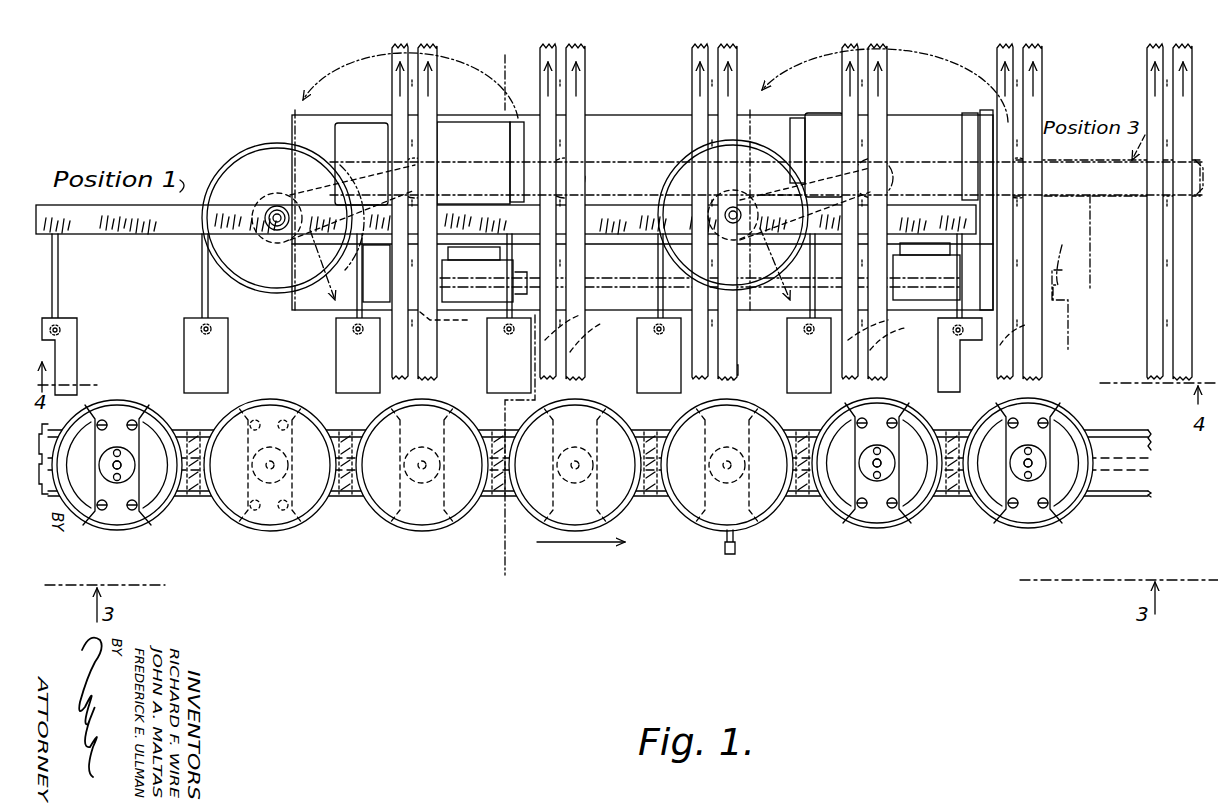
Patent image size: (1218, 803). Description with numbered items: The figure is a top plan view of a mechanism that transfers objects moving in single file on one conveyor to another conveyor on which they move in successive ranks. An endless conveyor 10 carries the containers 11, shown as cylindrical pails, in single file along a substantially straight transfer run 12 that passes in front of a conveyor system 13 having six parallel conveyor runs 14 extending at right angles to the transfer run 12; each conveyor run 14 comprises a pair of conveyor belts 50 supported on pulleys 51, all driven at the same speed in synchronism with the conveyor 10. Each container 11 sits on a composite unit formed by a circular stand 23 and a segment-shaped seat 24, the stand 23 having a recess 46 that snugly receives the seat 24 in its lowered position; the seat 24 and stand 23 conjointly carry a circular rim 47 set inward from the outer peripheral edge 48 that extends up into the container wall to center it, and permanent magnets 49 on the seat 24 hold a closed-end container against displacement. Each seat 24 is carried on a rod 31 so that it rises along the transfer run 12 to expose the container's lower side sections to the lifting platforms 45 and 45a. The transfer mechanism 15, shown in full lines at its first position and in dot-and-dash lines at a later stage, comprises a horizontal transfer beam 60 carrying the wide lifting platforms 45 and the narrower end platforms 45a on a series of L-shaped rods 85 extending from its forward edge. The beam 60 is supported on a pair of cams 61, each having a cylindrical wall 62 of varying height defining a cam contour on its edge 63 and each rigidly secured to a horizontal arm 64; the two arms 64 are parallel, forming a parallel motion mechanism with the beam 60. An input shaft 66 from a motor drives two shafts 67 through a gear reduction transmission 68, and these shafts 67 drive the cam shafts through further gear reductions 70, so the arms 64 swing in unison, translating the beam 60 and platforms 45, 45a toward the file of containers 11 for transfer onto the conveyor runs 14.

The endless conveyor 10 is at (385, 548).
The containers 11 is at (160, 438).
The transfer run 12 is at (497, 502).
The conveyor system 13 is at (1144, 46).
The conveyor runs 14 is at (390, 70).
The transfer mechanism 15 is at (146, 240).
The stand 23 is at (163, 500).
The seat 24 is at (117, 523).
The rod 31 is at (117, 462).
The lifting platforms 45 is at (230, 348).
The lifting platforms 45a is at (75, 350).
The recess 46 is at (92, 518).
The circular rim 47 is at (75, 420).
The outer peripheral edge 48 is at (126, 399).
The permanent magnets 49 is at (252, 525).
The conveyor belts 50 is at (410, 142).
The pulleys 51 is at (804, 330).
The transfer beam 60 is at (107, 230).
The cams 61 is at (240, 154).
The cylindrical wall 62 is at (222, 170).
The edge 63 is at (272, 293).
The horizontal arms 64 is at (360, 168).
The input shaft 66 is at (730, 552).
The shafts 67 is at (617, 278).
The gear reduction transmission 68 is at (740, 318).
The gear reductions 70 is at (490, 125).
The L-shaped rods 85 is at (58, 296).